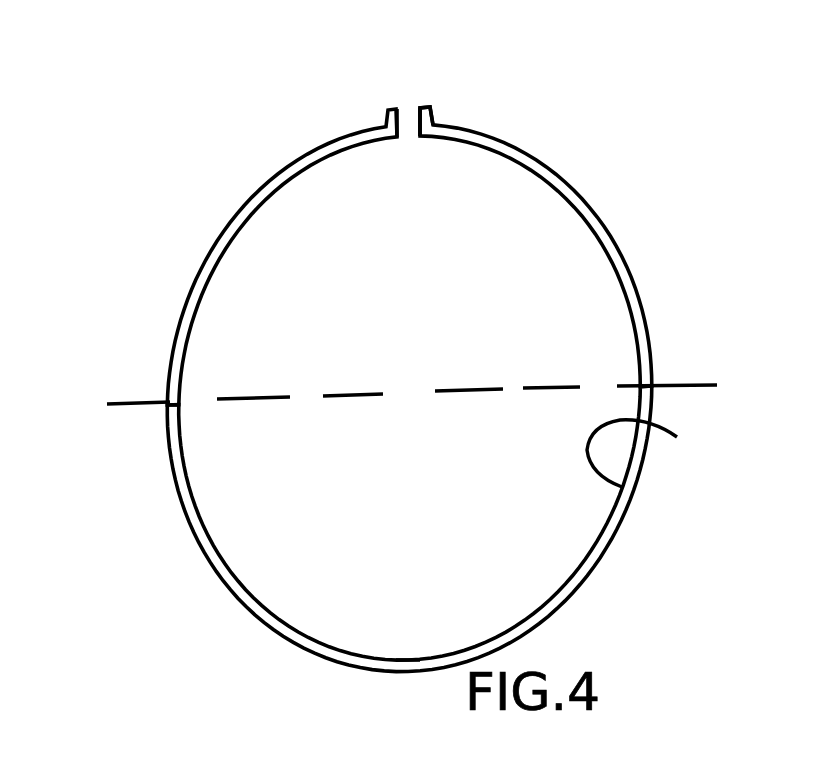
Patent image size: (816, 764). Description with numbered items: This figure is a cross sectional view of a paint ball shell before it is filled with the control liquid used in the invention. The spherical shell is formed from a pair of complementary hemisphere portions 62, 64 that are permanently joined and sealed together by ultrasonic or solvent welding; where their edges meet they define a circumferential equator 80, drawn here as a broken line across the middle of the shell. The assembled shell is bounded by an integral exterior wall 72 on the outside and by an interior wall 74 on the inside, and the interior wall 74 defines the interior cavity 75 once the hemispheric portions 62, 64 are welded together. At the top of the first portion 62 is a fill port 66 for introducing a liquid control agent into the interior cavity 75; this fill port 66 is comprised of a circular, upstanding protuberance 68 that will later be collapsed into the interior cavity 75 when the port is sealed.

The first hemisphere portion 62 is at (614, 248).
The second hemisphere portion 64 is at (407, 658).
The fill port 66 is at (408, 112).
The upstanding protuberance 68 is at (440, 118).
The exterior wall 72 is at (613, 537).
The interior wall 74 is at (671, 453).
The interior cavity 75 is at (318, 293).
The circumferential equator 80 is at (618, 386).